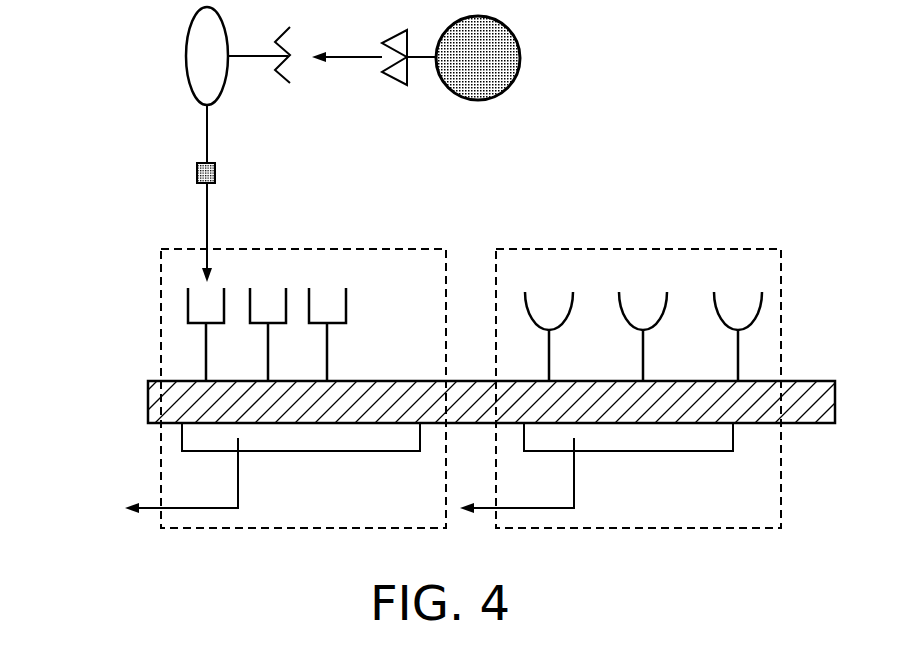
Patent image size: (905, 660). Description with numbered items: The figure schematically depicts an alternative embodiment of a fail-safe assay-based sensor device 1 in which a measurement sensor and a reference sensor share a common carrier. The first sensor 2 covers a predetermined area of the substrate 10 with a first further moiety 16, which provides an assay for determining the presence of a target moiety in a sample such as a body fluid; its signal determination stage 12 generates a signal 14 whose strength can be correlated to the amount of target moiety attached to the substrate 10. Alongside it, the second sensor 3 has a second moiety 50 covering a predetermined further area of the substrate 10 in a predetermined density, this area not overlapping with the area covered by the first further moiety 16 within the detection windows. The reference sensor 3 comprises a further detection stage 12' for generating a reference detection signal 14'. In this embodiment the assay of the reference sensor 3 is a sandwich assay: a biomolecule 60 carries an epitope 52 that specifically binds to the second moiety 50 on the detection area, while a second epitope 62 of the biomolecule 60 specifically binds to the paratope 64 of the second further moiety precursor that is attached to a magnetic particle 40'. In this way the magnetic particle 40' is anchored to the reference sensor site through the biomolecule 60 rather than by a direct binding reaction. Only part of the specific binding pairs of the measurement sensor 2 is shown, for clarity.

The assay-based sensor device 1 is at (80, 78).
The first sensor 2 is at (637, 530).
The second sensor 3 is at (302, 530).
The substrate 10 is at (800, 415).
The signal determination stage 12 is at (628, 469).
The further detection stage 12' is at (301, 469).
The signal 14 is at (554, 475).
The reference detection signal 14' is at (223, 475).
The first further moiety 16 is at (760, 302).
The second moiety 50 is at (347, 305).
The epitope 52 is at (197, 173).
The biomolecule 60 is at (189, 30).
The epitope 62 is at (290, 85).
The paratope 64 is at (398, 85).
The magnetic particle 40' is at (518, 58).